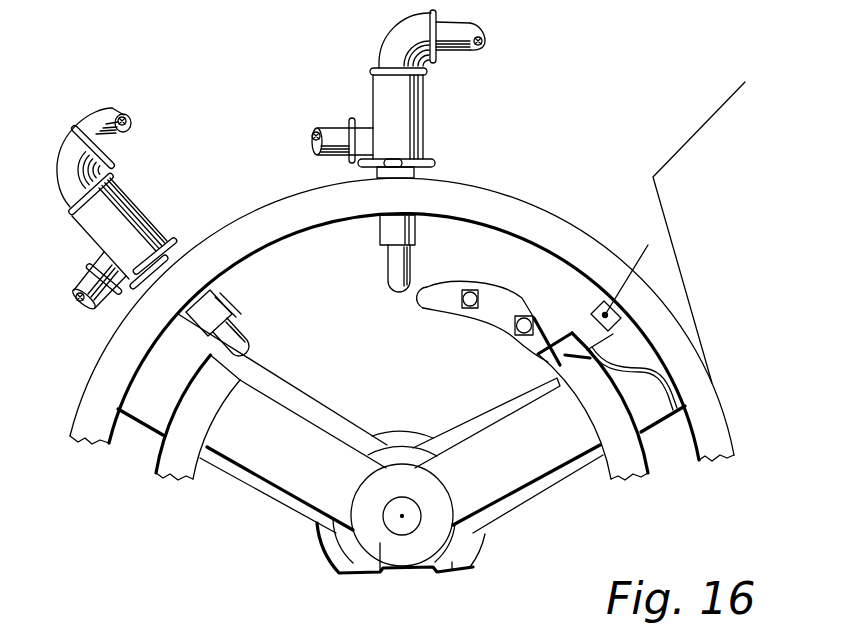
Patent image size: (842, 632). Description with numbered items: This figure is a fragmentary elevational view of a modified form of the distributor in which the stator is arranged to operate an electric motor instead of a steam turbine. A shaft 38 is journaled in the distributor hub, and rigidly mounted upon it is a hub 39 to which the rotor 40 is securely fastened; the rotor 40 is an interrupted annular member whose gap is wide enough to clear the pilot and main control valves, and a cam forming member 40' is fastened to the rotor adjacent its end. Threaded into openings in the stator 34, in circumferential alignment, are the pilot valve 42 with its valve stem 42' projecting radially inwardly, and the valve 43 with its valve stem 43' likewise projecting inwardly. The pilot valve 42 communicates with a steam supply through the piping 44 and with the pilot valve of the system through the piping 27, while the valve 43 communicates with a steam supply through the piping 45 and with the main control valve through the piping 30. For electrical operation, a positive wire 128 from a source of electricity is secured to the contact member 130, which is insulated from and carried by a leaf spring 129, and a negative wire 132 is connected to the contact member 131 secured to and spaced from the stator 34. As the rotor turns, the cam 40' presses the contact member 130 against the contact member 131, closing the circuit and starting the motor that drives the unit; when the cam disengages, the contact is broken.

The piping 27 is at (326, 129).
The piping 30 is at (78, 291).
The stator 34 is at (474, 192).
The shaft 38 is at (398, 518).
The hub 39 is at (378, 543).
The rotor 40 is at (593, 430).
The cam forming member 40' is at (488, 328).
The pilot valve 42 is at (429, 123).
The valve stem 42' is at (369, 253).
The valve 43 is at (131, 231).
The valve stem 43' is at (241, 323).
The piping 44 is at (473, 22).
The piping 45 is at (131, 124).
The positive wire 128 is at (694, 142).
The leaf spring 129 is at (596, 347).
The contact member 130 is at (597, 309).
The contact member 131 is at (622, 317).
The negative wire 132 is at (648, 246).